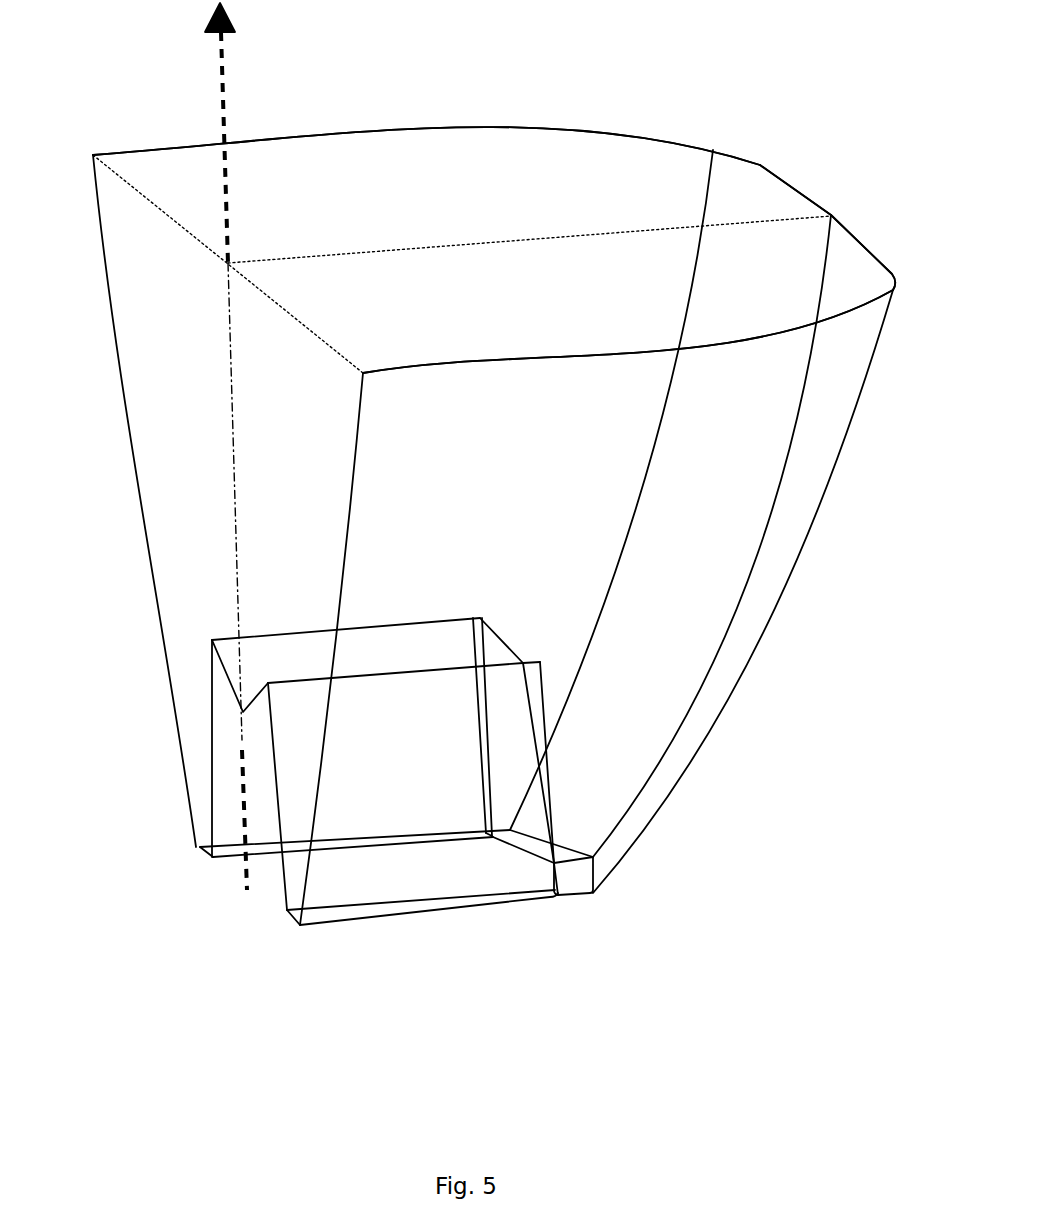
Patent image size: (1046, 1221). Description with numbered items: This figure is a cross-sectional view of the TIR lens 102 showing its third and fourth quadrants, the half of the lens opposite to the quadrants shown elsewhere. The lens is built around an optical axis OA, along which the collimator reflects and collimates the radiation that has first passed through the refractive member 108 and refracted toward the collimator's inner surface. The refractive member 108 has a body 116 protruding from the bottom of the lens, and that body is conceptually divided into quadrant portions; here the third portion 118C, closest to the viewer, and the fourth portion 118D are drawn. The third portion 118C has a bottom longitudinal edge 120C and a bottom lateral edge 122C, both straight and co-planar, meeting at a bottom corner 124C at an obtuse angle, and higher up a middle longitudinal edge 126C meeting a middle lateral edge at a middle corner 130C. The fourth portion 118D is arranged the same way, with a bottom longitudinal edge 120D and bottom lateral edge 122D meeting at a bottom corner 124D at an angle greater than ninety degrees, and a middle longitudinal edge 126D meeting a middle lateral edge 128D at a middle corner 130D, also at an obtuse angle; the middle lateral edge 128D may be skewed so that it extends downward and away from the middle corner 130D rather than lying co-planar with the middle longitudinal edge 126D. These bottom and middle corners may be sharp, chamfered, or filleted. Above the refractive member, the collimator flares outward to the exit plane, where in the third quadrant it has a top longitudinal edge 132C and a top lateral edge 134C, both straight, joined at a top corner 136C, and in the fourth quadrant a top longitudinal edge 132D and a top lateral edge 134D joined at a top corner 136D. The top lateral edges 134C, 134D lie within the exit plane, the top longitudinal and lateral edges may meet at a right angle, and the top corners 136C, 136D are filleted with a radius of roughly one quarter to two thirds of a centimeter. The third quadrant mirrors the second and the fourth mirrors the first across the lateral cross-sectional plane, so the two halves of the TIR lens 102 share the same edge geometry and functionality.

The TIR lens 102 is at (142, 97).
The optical axis OA is at (222, 88).
The refractive member 108 is at (144, 576).
The body 116 is at (247, 737).
The third portion 118C is at (278, 864).
The fourth portion 118D is at (211, 787).
The bottom longitudinal edge 120C is at (402, 907).
The bottom longitudinal edge 120D is at (398, 833).
The bottom lateral edge 122C is at (552, 877).
The bottom lateral edge 122D is at (510, 847).
The bottom corner 124C is at (553, 862).
The bottom corner 124D is at (486, 833).
The middle longitudinal edge 126C is at (368, 675).
The middle longitudinal edge 126D is at (318, 630).
The middle lateral edge 128D is at (493, 627).
The middle corner 130C is at (540, 662).
The middle corner 130D is at (483, 617).
The top longitudinal edge 132C is at (637, 350).
The top longitudinal edge 132D is at (358, 130).
The top lateral edge 134C is at (877, 250).
The top lateral edge 134D is at (798, 193).
The top corner 136C is at (897, 284).
The top corner 136D is at (668, 140).